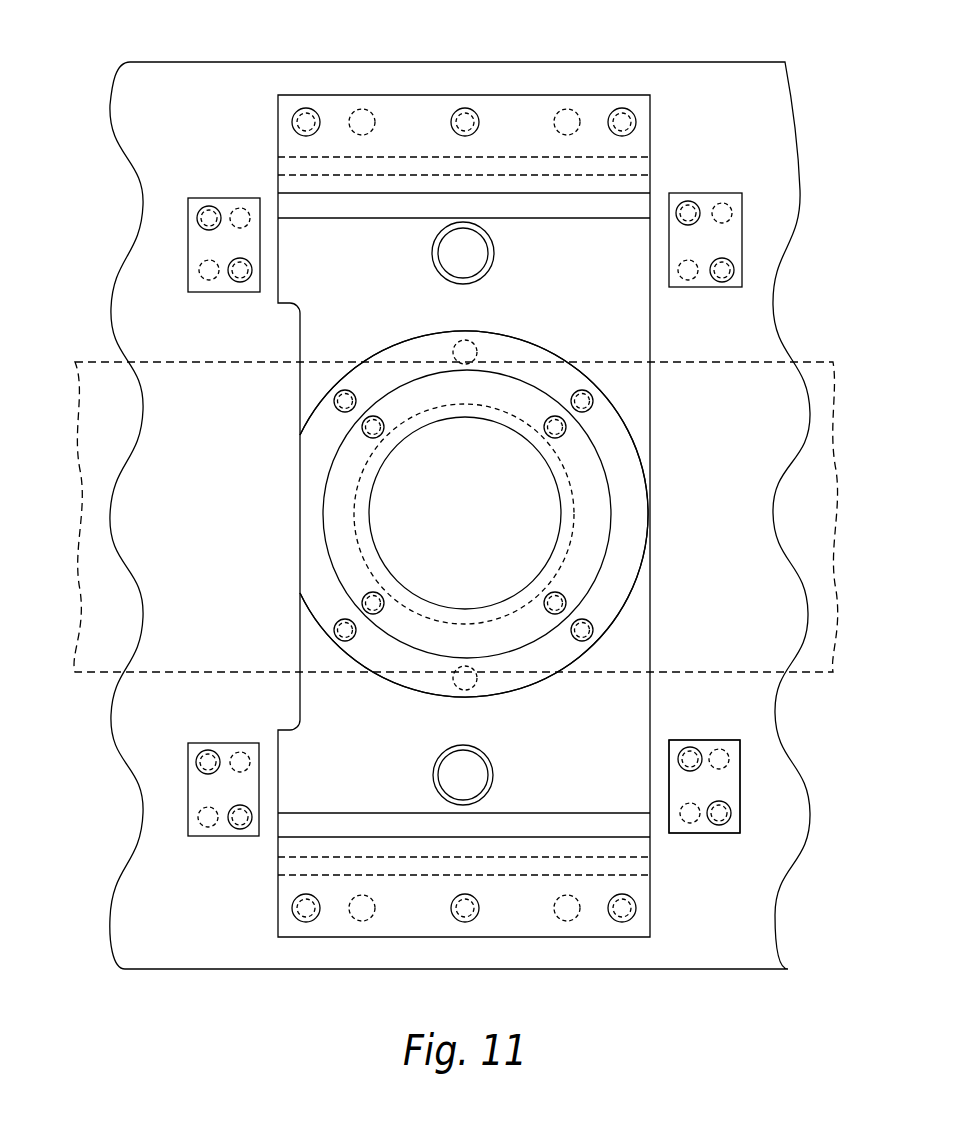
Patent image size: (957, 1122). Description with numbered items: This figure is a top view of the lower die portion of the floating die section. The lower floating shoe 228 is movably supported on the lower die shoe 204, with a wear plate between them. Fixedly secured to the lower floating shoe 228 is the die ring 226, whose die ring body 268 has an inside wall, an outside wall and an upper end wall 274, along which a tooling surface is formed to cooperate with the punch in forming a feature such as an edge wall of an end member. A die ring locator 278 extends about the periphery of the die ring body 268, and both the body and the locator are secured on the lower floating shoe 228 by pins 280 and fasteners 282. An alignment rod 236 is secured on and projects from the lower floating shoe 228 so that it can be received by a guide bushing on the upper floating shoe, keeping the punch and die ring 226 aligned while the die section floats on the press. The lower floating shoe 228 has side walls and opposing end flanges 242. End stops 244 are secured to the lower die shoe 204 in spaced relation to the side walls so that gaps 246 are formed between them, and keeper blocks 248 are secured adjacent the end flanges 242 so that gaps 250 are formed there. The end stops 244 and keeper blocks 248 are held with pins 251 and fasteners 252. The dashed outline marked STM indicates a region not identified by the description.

The lower die shoe 204 is at (214, 90).
The lower floating shoe 228 is at (625, 312).
The keeper blocks 248 is at (538, 112).
The end flanges 242 is at (547, 808).
The gaps 250 is at (655, 158).
The end stops 244 is at (228, 205).
The gaps 246 is at (660, 757).
The fasteners 252 is at (478, 112).
The pins 251 is at (352, 110).
The alignment rod 236 is at (489, 271).
The die ring 226 is at (610, 477).
The die ring locator 278 is at (317, 627).
The upper end wall 274 is at (352, 520).
The die ring body 268 is at (338, 565).
The pins 280 is at (476, 343).
The fasteners 282 is at (345, 388).
The scanning tunneling microscope STM is at (807, 357).